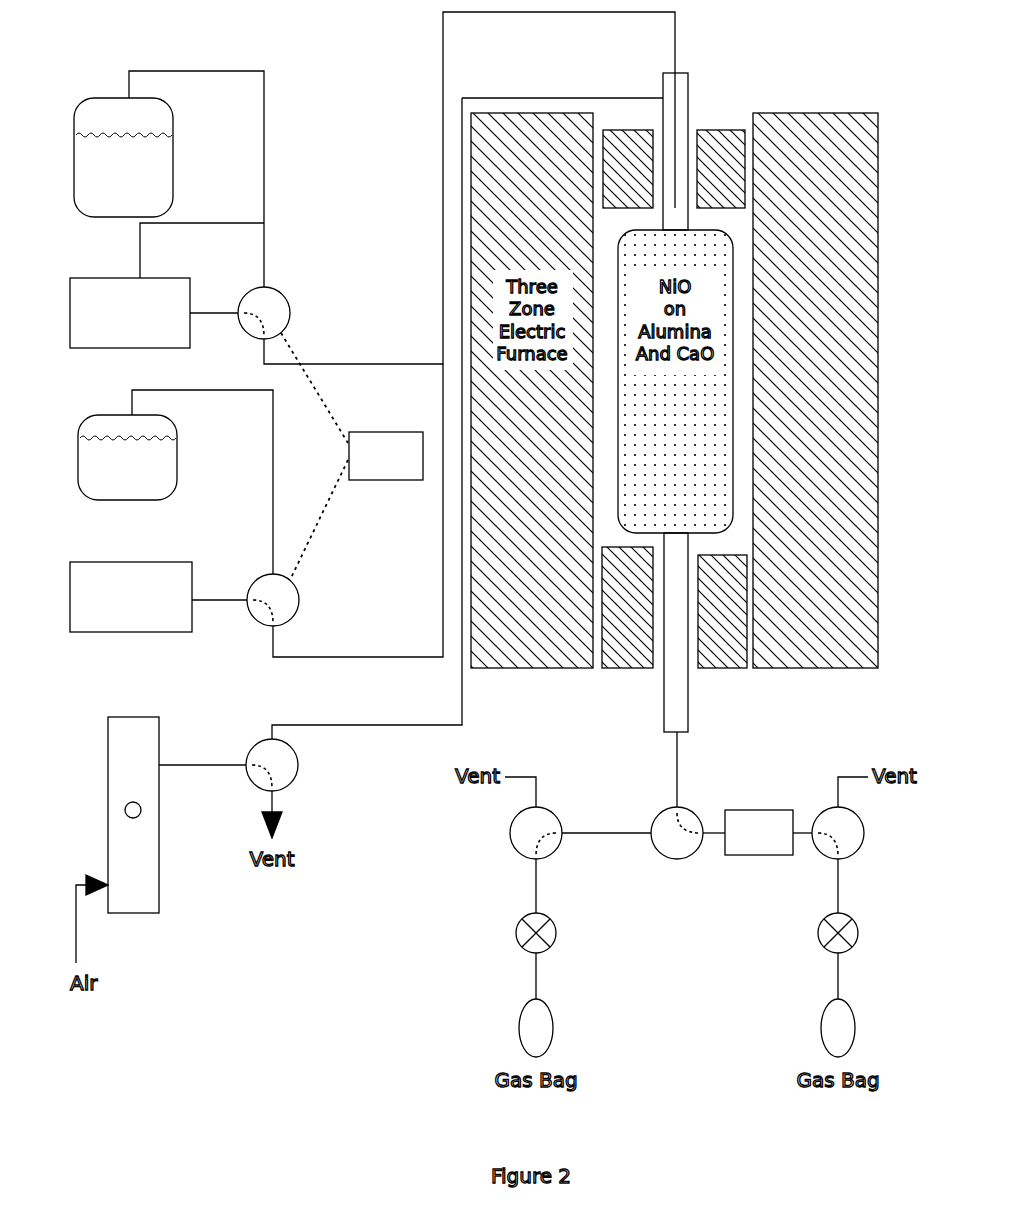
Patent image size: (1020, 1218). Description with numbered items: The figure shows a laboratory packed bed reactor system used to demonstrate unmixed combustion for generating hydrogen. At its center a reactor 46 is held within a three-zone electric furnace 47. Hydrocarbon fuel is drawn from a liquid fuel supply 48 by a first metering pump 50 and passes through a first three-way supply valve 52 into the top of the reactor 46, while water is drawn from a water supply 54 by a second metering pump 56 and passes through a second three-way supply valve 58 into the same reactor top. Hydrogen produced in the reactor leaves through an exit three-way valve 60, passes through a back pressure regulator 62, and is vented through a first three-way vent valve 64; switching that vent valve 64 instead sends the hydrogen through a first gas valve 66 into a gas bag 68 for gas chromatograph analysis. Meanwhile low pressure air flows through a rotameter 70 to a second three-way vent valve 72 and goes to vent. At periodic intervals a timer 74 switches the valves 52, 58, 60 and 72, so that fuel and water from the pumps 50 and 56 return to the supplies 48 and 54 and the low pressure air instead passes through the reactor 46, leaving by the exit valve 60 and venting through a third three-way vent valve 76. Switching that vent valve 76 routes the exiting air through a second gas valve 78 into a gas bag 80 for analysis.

The reactor 46 is at (688, 99).
The three-zone electric furnace 47 is at (810, 124).
The liquid fuel supply 48 is at (173, 158).
The first metering pump 50 is at (177, 288).
The first three-way supply valve 52 is at (290, 313).
The water supply 54 is at (177, 455).
The second metering pump 56 is at (179, 618).
The second three-way supply valve 58 is at (299, 600).
The exit three-way valve 60 is at (667, 843).
The back pressure regulator 62 is at (760, 810).
The first three-way vent valve 64 is at (847, 845).
The first gas valve 66 is at (823, 928).
The gas bag 68 is at (828, 1017).
The rotameter 70 is at (147, 860).
The second three-way vent valve 72 is at (298, 762).
The timer 74 is at (388, 480).
The third three-way vent valve 76 is at (520, 823).
The second gas valve 78 is at (520, 928).
The gas bag 80 is at (526, 1017).